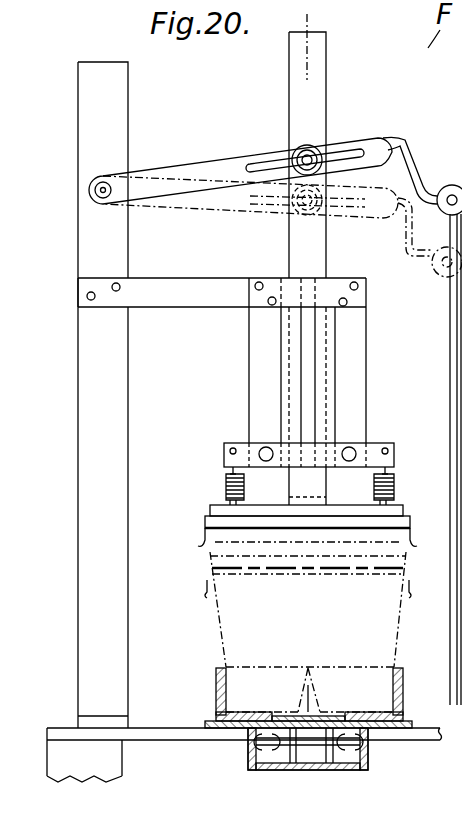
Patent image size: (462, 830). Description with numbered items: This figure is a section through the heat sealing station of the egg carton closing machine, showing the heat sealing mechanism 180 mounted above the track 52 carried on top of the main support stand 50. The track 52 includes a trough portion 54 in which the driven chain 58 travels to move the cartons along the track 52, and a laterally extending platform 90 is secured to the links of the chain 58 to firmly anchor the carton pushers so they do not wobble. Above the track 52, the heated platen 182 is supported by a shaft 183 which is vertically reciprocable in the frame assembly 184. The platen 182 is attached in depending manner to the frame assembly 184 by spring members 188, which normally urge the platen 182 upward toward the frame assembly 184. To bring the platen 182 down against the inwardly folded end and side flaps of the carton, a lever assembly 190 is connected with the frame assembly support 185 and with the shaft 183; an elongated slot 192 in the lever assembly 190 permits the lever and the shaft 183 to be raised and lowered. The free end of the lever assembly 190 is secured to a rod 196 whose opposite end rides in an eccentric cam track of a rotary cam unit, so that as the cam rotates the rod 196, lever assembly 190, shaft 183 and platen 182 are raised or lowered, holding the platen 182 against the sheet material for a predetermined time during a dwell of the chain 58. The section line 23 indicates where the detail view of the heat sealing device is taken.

The section line 23— 23 is at (276, 10).
The main support stand 50 is at (412, 725).
The track 52 is at (403, 695).
The trough portion 54 is at (369, 764).
The chain 58 is at (330, 746).
The platform 90 is at (250, 753).
The heat sealing mechanism 180 is at (216, 452).
The platen 182 is at (396, 528).
The shaft 183 is at (314, 253).
The frame assembly 184 is at (380, 354).
The frame assembly support 185 is at (92, 396).
The spring members 188 is at (226, 492).
The lever assembly 190 is at (218, 158).
The elongated slot 192 is at (345, 150).
The rod 196 is at (452, 414).